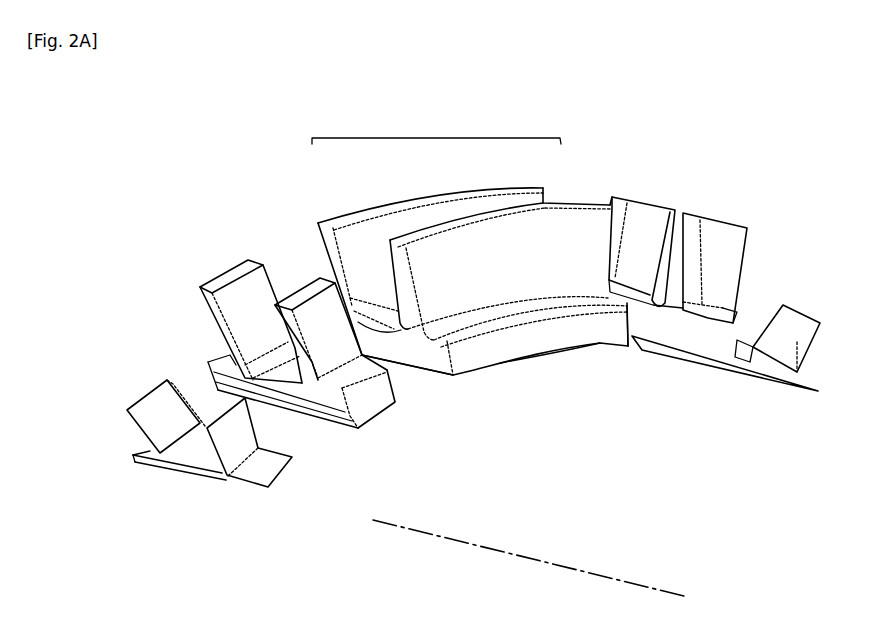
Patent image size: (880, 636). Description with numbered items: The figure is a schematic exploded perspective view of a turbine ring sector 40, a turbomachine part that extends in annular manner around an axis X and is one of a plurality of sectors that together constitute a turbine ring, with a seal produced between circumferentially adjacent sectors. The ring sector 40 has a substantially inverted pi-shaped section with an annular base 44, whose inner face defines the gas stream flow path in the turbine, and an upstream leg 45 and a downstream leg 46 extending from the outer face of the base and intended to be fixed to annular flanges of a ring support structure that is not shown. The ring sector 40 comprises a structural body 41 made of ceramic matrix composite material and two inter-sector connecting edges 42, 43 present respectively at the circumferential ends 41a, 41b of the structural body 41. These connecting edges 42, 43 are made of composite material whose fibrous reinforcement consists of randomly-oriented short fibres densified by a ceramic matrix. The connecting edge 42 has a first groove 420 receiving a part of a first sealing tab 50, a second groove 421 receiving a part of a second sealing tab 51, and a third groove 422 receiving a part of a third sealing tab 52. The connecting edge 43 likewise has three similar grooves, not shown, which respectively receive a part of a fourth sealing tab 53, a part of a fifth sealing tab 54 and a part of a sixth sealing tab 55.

The turbine ring sector 40 is at (435, 138).
The structural body 41 is at (437, 192).
The circumferential end 41a is at (426, 364).
The circumferential end 41b is at (634, 342).
The inter-sector connecting edge 42 is at (248, 260).
The inter-sector connecting edge 43 is at (640, 200).
The annular base 44 is at (537, 346).
The upstream leg 45 is at (358, 235).
The downstream leg 46 is at (498, 247).
The first sealing tab 50 is at (184, 471).
The second sealing tab 51 is at (237, 452).
The third sealing tab 52 is at (155, 462).
The fourth sealing tab 53 is at (755, 378).
The fifth sealing tab 54 is at (797, 341).
The sixth sealing tab 55 is at (747, 342).
The first groove 420 is at (321, 416).
The second groove 421 is at (382, 418).
The third groove 422 is at (273, 402).
The axis X is at (668, 590).